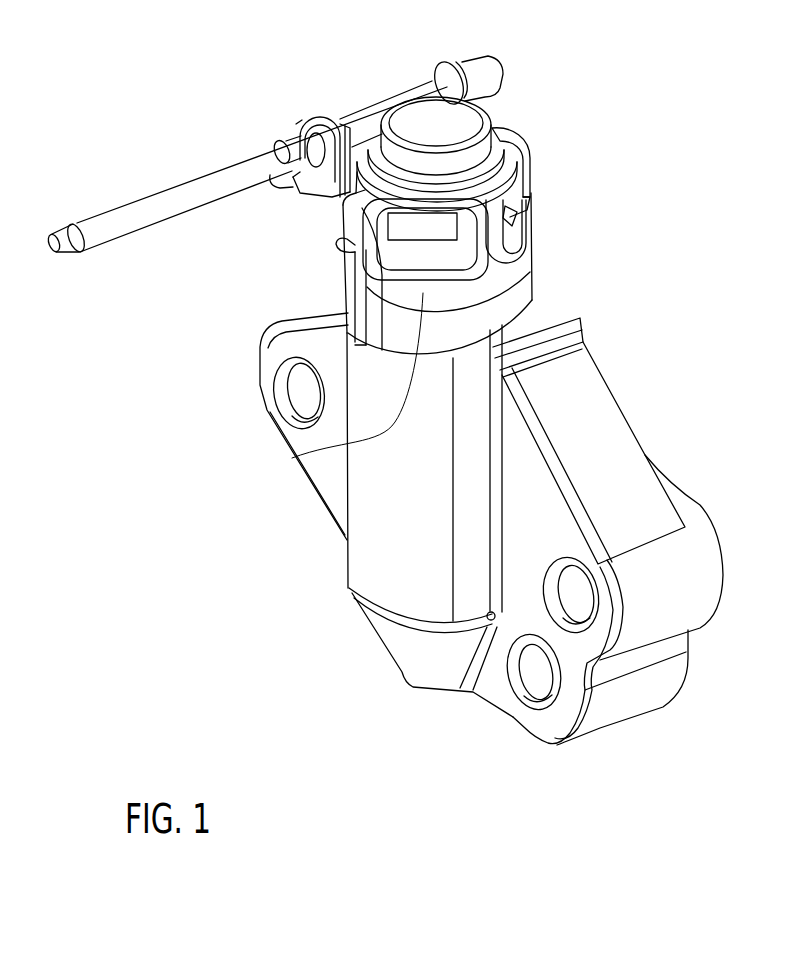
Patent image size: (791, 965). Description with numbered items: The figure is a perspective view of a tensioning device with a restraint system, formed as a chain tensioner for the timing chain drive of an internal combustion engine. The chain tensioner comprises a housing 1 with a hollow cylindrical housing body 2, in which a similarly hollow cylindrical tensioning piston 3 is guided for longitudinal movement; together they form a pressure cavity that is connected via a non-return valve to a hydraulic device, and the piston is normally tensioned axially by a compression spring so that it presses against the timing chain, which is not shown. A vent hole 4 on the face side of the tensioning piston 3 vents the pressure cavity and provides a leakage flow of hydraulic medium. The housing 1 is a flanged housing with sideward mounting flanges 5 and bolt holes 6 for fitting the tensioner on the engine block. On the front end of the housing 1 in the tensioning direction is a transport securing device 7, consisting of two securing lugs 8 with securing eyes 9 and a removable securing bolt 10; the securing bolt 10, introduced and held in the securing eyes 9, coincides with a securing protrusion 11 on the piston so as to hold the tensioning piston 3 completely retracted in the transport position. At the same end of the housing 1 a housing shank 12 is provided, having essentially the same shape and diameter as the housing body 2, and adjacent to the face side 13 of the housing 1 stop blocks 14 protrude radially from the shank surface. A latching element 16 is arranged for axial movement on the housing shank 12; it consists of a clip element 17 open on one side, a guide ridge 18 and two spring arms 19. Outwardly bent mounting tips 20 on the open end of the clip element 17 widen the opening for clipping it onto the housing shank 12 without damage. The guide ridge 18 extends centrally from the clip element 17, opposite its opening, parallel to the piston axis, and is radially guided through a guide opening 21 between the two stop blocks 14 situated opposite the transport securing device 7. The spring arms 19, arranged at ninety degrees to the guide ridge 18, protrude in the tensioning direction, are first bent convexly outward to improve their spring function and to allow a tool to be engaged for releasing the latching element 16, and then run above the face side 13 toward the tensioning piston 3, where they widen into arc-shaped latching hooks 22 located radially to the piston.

The housing 1 is at (617, 392).
The housing body 2 is at (363, 547).
The tensioning piston 3 is at (492, 108).
The vent hole 4 is at (440, 127).
The mounting flanges 5 is at (625, 440).
The bolt holes 6 is at (300, 395).
The transport securing device 7 is at (294, 124).
The securing lugs 8 is at (282, 186).
The securing eyes 9 is at (318, 116).
The securing bolt 10 is at (130, 212).
The securing protrusion 11 is at (362, 140).
The housing shank 12 is at (458, 257).
The face side 13 is at (537, 173).
The stop blocks 14 is at (533, 194).
The latching element 16 is at (347, 280).
The clip element 17 is at (297, 458).
The guide ridge 18 is at (494, 246).
The spring arms 19 is at (340, 212).
The mounting tips 20 is at (336, 243).
The guide opening 21 is at (527, 227).
The latching hooks 22 is at (340, 197).